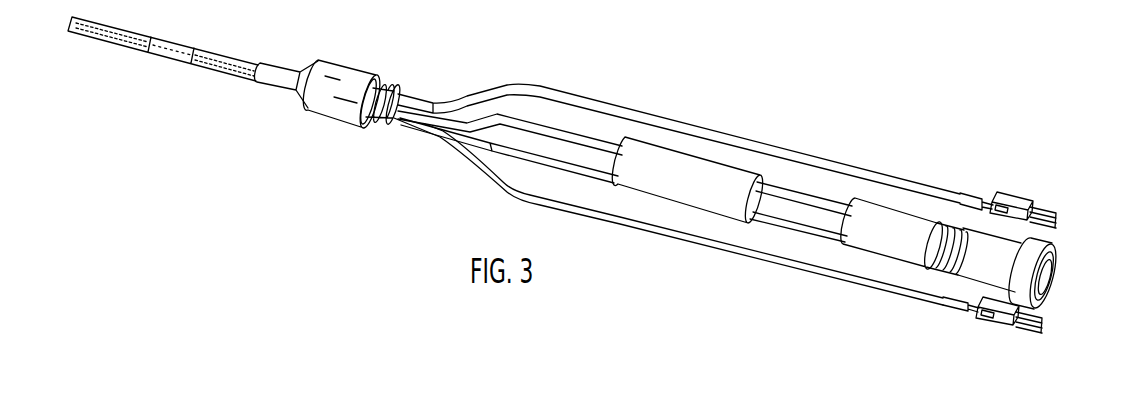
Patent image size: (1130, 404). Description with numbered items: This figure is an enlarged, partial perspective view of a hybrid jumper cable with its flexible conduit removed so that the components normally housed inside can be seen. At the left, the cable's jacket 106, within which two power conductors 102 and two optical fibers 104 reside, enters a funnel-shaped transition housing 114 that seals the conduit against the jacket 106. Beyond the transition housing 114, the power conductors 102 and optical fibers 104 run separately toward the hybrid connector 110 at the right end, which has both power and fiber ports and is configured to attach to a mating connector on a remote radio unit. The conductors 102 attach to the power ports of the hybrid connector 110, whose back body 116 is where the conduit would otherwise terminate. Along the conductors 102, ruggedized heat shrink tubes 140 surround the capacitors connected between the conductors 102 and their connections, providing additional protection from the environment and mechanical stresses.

The power conductor 102 is at (587, 165).
The optical fiber 104 is at (797, 265).
The jacket 106 is at (238, 61).
The hybrid connector 110 is at (1060, 251).
The transition housing 114 is at (354, 77).
The back body 116 is at (982, 269).
The heat shrink tube 140 is at (662, 170).